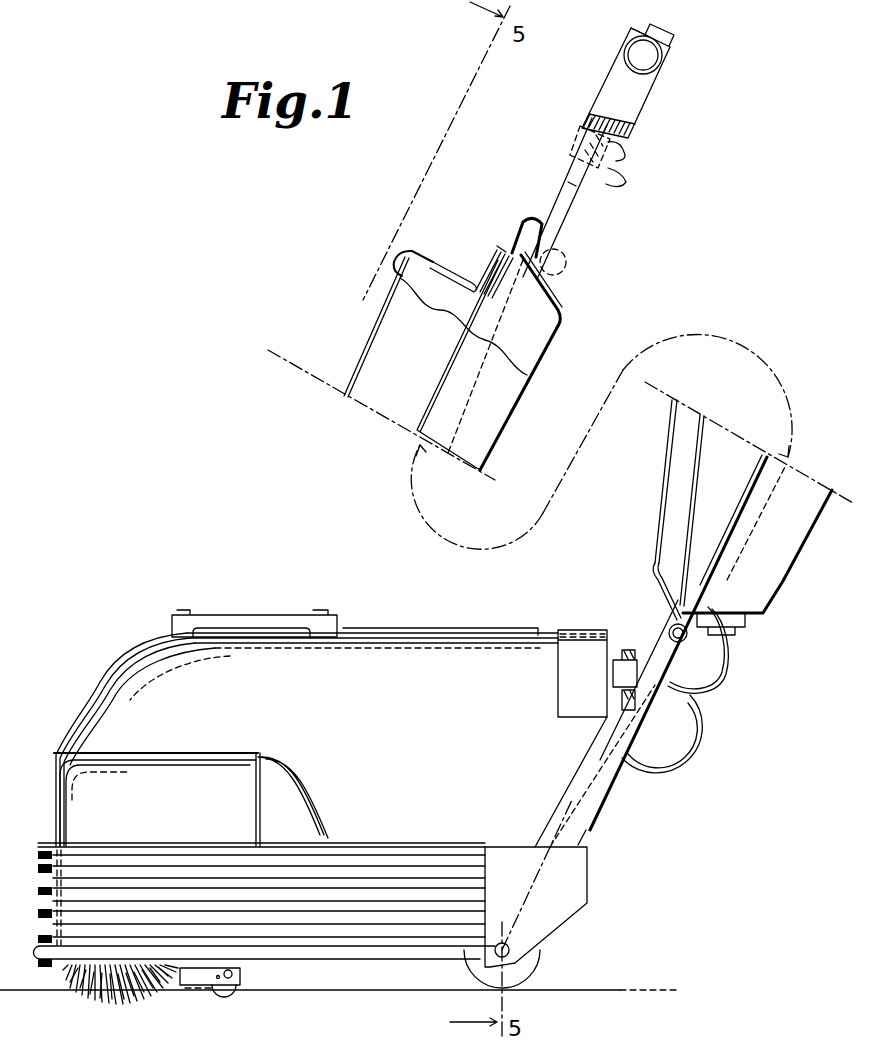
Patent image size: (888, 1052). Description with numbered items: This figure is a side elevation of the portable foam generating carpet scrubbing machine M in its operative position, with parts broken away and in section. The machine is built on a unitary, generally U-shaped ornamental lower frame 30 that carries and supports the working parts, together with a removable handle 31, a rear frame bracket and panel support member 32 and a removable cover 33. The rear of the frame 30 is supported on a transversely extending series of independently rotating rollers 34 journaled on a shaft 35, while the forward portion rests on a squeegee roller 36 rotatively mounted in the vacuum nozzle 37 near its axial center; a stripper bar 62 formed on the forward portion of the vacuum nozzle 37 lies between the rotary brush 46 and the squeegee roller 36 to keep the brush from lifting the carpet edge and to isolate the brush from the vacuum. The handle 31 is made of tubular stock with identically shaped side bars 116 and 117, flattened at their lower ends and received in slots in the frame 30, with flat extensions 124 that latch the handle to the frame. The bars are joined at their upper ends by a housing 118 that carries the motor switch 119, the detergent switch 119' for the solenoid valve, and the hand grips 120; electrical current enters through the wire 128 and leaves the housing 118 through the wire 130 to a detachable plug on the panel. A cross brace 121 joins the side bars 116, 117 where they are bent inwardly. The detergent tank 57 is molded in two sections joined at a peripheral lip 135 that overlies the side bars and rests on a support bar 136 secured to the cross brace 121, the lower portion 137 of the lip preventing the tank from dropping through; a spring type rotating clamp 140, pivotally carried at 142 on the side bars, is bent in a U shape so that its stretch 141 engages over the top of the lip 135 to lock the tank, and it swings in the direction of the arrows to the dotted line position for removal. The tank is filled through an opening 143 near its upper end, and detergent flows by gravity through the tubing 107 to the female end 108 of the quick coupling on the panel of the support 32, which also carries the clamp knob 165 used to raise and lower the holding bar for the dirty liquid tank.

The portable foam generating carpet scrubbing machine M is at (262, 595).
The lower frame member 30 is at (292, 944).
The removable handle 31 is at (570, 200).
The rear frame bracket and panel support member 32 is at (575, 640).
The removable cover 33 is at (378, 748).
The rollers 34 is at (540, 955).
The shaft 35 is at (508, 947).
The squeegee roller 36 is at (221, 993).
The vacuum nozzle 37 is at (186, 992).
The brush 46 is at (110, 1003).
The detergent tank 57 is at (358, 392).
The stripper bar 62 is at (182, 980).
The tubing 107 is at (708, 692).
The female end of the quick coupling member 108 is at (668, 640).
The side bar 116 is at (618, 150).
The side bar 117 is at (568, 185).
The housing 118 is at (638, 98).
The motor switch 119 is at (618, 23).
The detergent switch 119' is at (695, 35).
The hand grips 120 is at (660, 65).
The cross brace 121 is at (709, 613).
The flat extensions 124 is at (578, 843).
The wire 128 is at (620, 183).
The wire 130 is at (582, 160).
The peripheral lip 135 is at (540, 224).
The support bar 136 is at (672, 610).
The lower portion of the peripheral lip 137 is at (682, 643).
The spring type rotating clamp 140 is at (500, 244).
The stretch 141 is at (493, 246).
The pivot 142 is at (566, 262).
The filling opening 143 is at (400, 252).
The clamp knob 165 is at (628, 650).